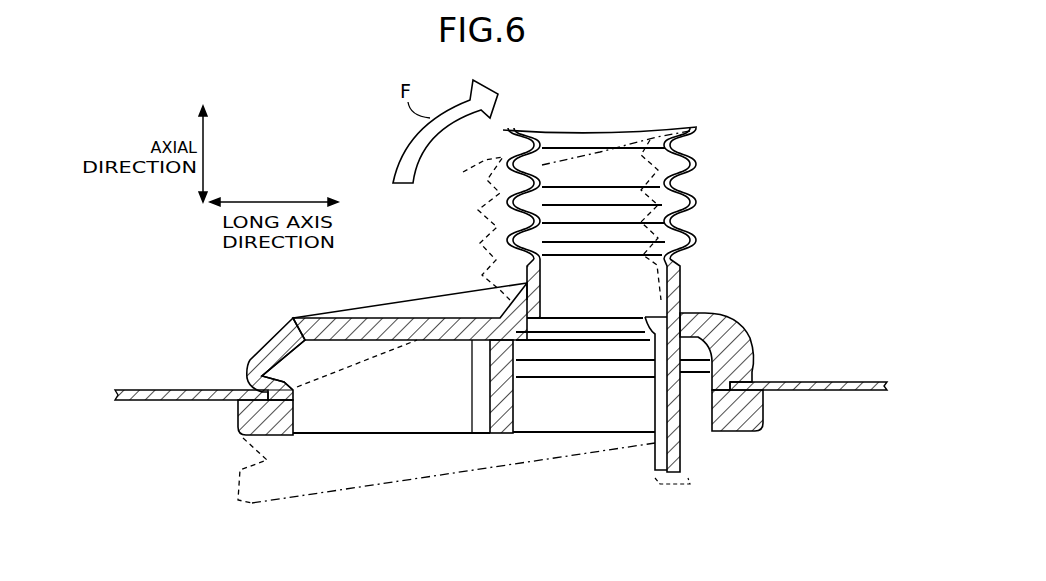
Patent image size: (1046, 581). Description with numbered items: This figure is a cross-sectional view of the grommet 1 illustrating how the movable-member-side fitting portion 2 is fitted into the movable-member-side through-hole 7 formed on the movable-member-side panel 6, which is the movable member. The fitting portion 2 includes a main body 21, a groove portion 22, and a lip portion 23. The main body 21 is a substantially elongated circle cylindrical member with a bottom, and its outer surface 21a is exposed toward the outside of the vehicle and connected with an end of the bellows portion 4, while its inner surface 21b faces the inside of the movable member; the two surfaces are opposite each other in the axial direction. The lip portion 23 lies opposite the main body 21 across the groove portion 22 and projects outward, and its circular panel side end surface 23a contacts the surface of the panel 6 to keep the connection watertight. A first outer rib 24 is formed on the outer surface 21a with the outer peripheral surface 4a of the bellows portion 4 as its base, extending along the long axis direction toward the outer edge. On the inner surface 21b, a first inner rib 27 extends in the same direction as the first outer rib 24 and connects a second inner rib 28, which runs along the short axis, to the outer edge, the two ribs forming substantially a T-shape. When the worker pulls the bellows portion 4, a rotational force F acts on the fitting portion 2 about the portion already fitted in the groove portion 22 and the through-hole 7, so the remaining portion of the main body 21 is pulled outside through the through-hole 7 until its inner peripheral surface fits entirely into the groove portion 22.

The grommet 1 is at (760, 90).
The movable-member-side fitting portion 2 is at (728, 317).
The bellows portion 4 is at (702, 175).
The outer peripheral surface of the bellows portion 4a is at (680, 283).
The movable-member-side panel 6 is at (133, 390).
The movable-member-side through-hole 7 is at (718, 432).
The main body 21 is at (745, 334).
The outer surface 21a is at (377, 320).
The inner surface 21b is at (430, 340).
The groove portion 22 is at (262, 388).
The lip portion 23 is at (763, 398).
The panel side end surface 23a is at (218, 380).
The first outer rib 24 is at (430, 303).
The first inner rib 27 is at (395, 387).
The second inner rib 28 is at (510, 395).